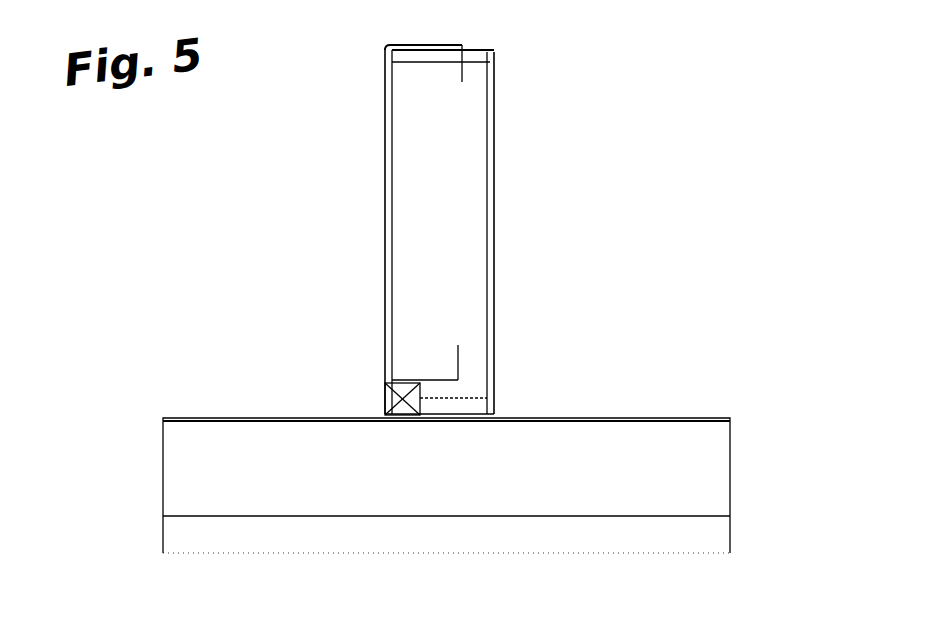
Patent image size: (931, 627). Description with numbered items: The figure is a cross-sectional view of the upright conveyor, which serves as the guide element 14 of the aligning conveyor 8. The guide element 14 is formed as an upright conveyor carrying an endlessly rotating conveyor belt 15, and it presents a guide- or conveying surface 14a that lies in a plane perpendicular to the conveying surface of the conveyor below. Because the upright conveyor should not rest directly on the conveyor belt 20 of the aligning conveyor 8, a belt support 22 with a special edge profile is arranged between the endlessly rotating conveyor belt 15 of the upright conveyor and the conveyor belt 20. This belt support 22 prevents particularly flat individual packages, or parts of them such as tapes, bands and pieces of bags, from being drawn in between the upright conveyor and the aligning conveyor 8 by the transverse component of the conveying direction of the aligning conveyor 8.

The aligning conveyor 8 is at (738, 457).
The guide element 14 is at (508, 111).
The guide- or conveying surface 14a is at (384, 220).
The endlessly rotating conveyor belt 15 is at (493, 242).
The conveyor belt 20 is at (613, 416).
The belt support 22 is at (396, 398).